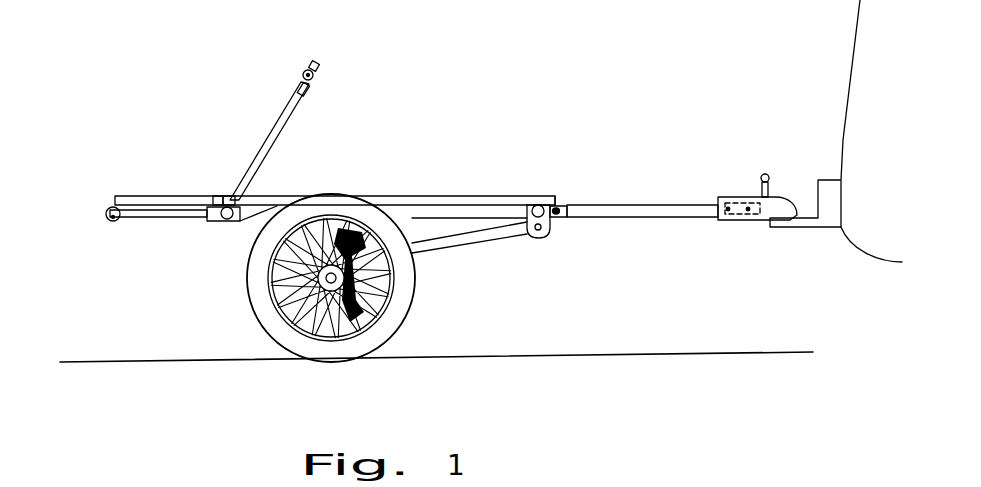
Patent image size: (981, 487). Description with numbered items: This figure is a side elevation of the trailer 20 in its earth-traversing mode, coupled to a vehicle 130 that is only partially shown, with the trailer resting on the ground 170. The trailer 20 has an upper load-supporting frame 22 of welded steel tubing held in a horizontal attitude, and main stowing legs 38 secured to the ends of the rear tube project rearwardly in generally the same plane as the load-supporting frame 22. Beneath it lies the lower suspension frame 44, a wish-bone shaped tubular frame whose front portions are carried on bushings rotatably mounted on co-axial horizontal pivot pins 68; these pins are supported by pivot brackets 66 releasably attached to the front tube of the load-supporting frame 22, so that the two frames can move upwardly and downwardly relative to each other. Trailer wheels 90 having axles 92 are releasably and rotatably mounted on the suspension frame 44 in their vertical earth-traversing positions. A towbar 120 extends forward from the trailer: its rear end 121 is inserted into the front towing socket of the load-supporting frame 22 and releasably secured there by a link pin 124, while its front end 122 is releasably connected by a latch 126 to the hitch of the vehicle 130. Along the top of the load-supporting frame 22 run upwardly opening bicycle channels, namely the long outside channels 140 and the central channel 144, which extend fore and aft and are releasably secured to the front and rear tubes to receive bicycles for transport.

The trailer 20 is at (385, 143).
The load-supporting frame 22 is at (244, 232).
The main stowing legs 38 is at (150, 222).
The suspension frame 44 is at (462, 254).
The pivot brackets 66 is at (550, 229).
The pivot pins 68 is at (539, 231).
The trailer wheels 90 is at (408, 310).
The axles 92 is at (322, 286).
The towbar 120 is at (665, 204).
The rear end of towbar 121 is at (572, 208).
The front end of towbar 122 is at (785, 197).
The link pin 124 is at (556, 204).
The latch 126 is at (767, 173).
The vehicle 130 is at (853, 28).
The outside bicycle channels 140 is at (192, 197).
The central bicycle channel 144 is at (225, 223).
The ground 170 is at (627, 353).